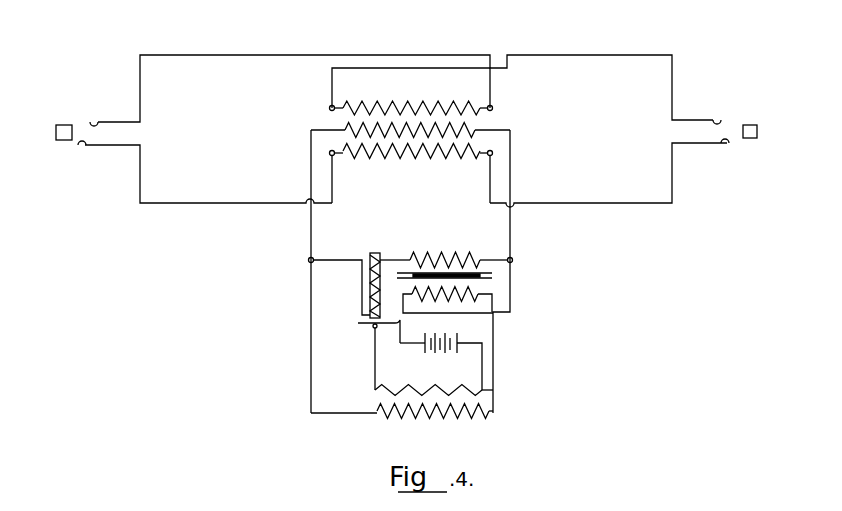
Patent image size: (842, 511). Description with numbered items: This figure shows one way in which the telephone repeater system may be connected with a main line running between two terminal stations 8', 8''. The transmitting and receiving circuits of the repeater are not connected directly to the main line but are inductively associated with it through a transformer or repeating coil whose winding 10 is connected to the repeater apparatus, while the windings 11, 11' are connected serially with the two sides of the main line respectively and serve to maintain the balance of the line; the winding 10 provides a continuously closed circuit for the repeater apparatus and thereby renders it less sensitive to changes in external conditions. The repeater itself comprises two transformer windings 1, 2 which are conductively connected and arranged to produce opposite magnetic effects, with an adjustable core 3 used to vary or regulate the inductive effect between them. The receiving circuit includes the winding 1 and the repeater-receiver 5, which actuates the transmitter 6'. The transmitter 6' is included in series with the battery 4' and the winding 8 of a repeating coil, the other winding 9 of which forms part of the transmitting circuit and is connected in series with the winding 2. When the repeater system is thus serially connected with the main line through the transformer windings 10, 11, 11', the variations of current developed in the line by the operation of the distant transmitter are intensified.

The terminal station 8' is at (64, 154).
The terminal station 8'' is at (741, 147).
The transformer winding 11 is at (411, 72).
The transformer winding 10 is at (497, 118).
The transformer winding 11' is at (411, 174).
The transformer winding 1 is at (443, 250).
The core 3 is at (492, 275).
The transformer winding 2 is at (468, 304).
The repeater-receiver 5 is at (371, 296).
The transmitter 6' is at (363, 339).
The battery 4' is at (441, 361).
The repeating coil winding 8 is at (447, 362).
The repeating coil winding 9 is at (487, 412).